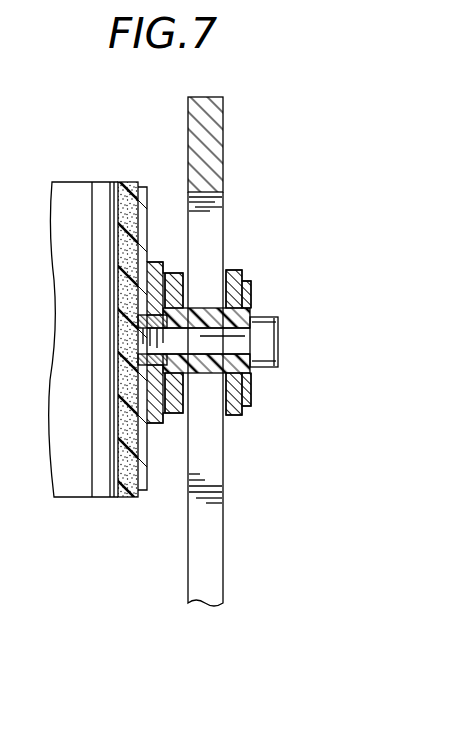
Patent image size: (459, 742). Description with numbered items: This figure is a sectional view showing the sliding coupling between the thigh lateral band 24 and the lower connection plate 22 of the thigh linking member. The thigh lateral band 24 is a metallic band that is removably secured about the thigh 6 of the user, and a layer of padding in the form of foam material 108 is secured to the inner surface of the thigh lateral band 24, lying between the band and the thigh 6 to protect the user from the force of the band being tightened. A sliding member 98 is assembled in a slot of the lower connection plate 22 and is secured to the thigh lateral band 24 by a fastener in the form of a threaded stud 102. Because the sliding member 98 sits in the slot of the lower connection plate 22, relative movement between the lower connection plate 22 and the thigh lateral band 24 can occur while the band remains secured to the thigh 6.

The thigh 6 is at (80, 319).
The foam material 108 is at (122, 205).
The thigh lateral band 24 is at (143, 197).
The lower connection plate 22 is at (212, 208).
The sliding member 98 is at (245, 303).
The threaded stud 102 is at (228, 340).